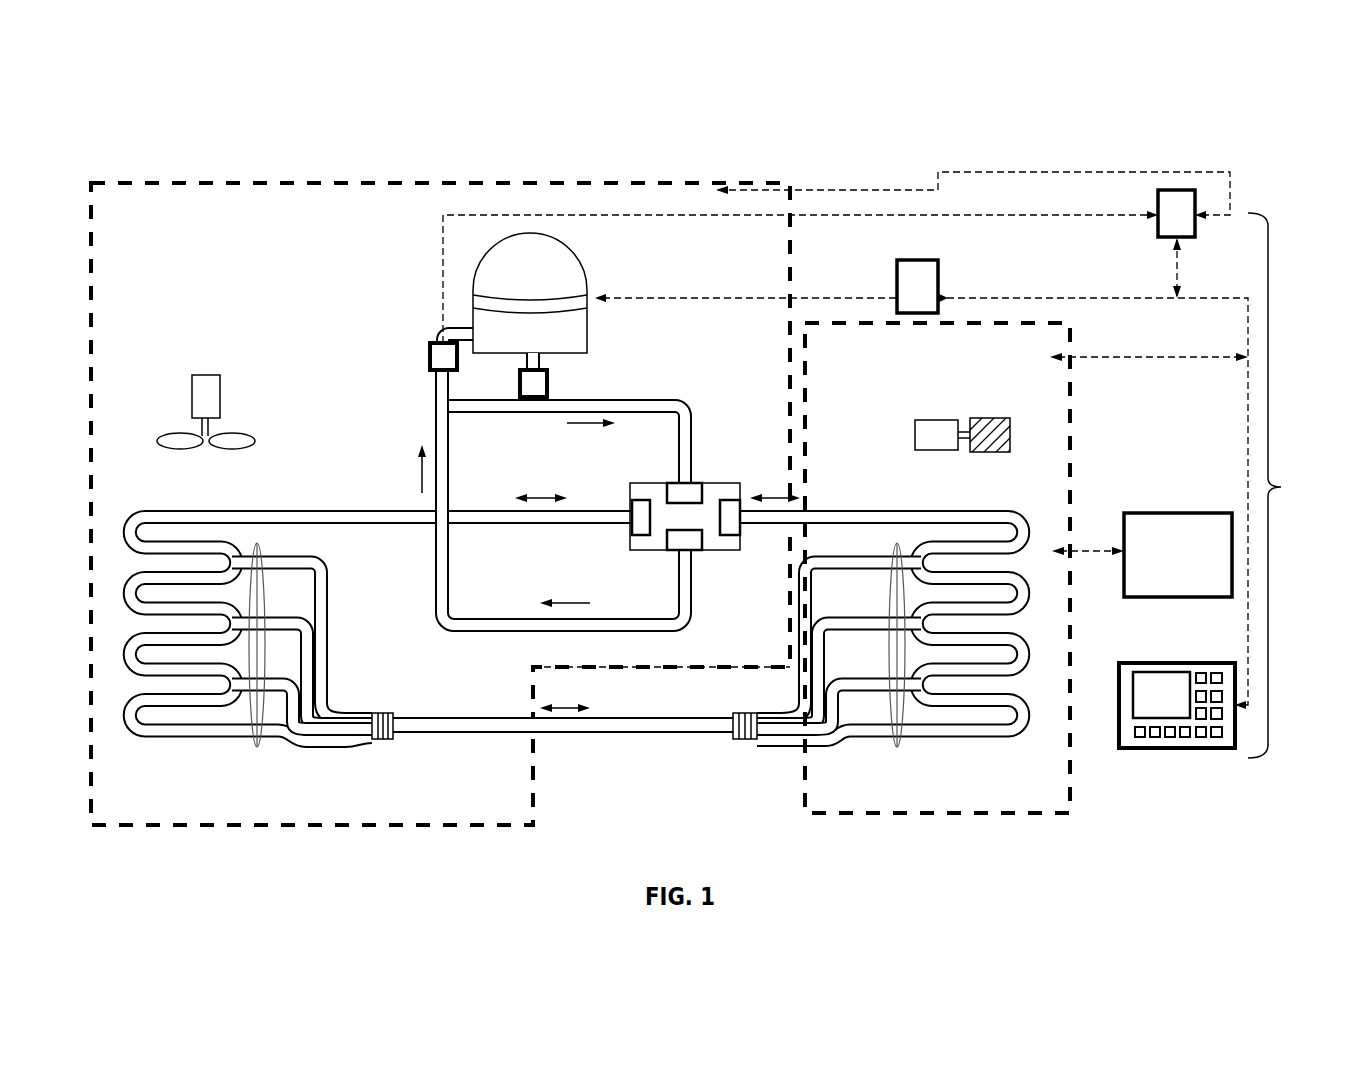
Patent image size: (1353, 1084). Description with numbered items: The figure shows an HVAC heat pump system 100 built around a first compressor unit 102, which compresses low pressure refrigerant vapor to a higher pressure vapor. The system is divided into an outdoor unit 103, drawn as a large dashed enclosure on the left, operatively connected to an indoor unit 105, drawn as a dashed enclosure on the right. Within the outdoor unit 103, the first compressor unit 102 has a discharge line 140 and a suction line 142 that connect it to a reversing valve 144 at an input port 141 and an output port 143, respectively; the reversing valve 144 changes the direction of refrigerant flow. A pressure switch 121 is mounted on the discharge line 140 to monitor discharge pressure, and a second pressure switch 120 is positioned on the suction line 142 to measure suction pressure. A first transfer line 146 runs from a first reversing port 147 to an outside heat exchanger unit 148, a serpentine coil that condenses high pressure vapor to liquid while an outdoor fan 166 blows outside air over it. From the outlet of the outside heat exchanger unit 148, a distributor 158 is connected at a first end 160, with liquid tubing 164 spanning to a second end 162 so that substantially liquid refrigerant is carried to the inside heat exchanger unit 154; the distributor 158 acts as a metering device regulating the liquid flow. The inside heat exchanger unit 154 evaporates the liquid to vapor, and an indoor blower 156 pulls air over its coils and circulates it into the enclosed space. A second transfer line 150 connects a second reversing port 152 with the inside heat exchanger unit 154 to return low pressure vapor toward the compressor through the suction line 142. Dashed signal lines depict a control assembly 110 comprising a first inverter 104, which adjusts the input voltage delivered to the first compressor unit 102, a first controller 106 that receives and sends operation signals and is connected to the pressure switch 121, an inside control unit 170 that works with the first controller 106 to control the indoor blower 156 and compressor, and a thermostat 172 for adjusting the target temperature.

The heat pump system 100 is at (862, 141).
The first compressor unit 102 is at (567, 242).
The outdoor unit 103 is at (252, 180).
The first inverter 104 is at (897, 290).
The indoor unit 105 is at (970, 315).
The first controller 106 is at (1177, 190).
The control assembly 110 is at (1281, 487).
The pressure switch 120 is at (431, 345).
The pressure switch 121 is at (548, 383).
The discharge line 140 is at (548, 416).
The input port 141 is at (697, 483).
The suction line 142 is at (452, 327).
The output port 143 is at (693, 552).
The reversing valve 144 is at (669, 503).
The first transfer line 146 is at (338, 508).
The first reversing port 147 is at (632, 528).
The outside heat exchanger unit 148 is at (140, 506).
The second transfer line 150 is at (813, 508).
The second reversing port 152 is at (735, 530).
The inside heat exchanger unit 154 is at (1005, 508).
The indoor blower 156 is at (925, 420).
The distributor 158 is at (618, 760).
The first end 160 is at (368, 740).
The second end 162 is at (757, 740).
The liquid tubing 164 is at (490, 735).
The outdoor fan 166 is at (205, 374).
The inside control unit 170 is at (1138, 513).
The thermostat 172 is at (1119, 705).